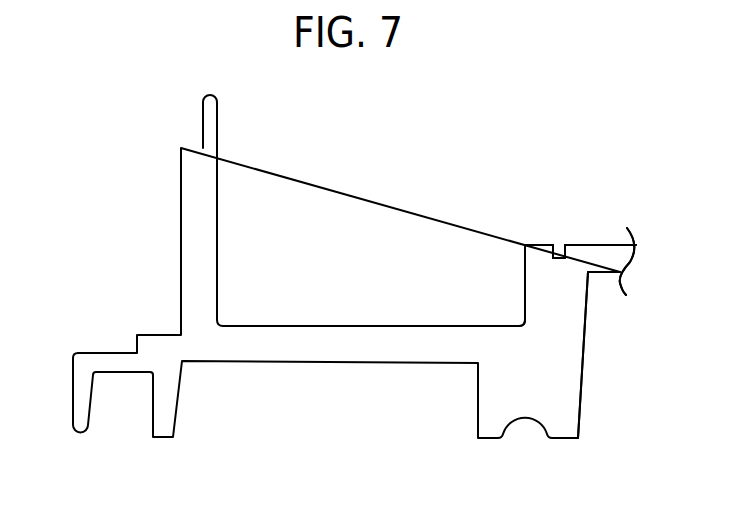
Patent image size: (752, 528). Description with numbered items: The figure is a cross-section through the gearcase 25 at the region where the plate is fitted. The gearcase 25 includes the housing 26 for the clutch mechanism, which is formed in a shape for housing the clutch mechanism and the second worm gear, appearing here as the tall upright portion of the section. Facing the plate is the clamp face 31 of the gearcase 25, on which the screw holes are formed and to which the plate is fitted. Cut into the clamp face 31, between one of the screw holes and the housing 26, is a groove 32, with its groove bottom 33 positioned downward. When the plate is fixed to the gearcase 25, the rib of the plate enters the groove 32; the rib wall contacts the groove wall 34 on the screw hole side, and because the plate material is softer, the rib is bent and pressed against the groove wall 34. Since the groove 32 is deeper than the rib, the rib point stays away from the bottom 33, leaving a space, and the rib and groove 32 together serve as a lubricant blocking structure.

The gearcase 25 is at (140, 157).
The housing for the clutch mechanism 26 is at (525, 280).
The clamp face 31 is at (613, 244).
The groove 32 is at (558, 244).
The groove bottom 33 is at (565, 260).
The groove wall 34 is at (574, 250).